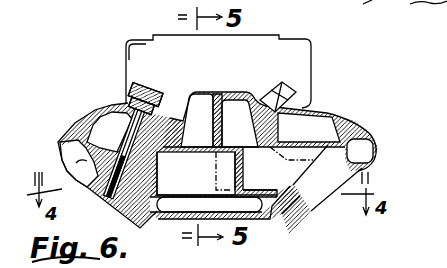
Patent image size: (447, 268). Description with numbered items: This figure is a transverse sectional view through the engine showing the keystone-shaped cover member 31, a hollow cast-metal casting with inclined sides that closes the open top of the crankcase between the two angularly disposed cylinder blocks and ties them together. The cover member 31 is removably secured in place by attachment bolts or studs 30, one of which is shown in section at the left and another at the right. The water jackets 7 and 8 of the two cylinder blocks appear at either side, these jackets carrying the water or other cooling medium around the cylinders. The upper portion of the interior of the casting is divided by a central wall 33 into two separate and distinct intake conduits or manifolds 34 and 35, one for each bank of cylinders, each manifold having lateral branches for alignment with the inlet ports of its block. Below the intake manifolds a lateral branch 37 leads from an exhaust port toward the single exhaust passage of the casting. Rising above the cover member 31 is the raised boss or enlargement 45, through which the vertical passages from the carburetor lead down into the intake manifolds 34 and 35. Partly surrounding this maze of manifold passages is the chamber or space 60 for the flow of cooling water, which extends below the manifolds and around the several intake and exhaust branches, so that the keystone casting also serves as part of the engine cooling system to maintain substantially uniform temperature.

The water jacket 7 is at (72, 142).
The water jacket 8 is at (362, 147).
The attachment bolts or studs 30 is at (155, 92).
The cover member 31 is at (327, 113).
The central wall 33 is at (222, 97).
The intake conduit or manifold 34 is at (197, 120).
The intake conduit or manifold 35 is at (240, 123).
The lateral branch 37 is at (261, 179).
The raised boss or enlargement 45 is at (304, 44).
The water chamber or space 60 is at (213, 153).